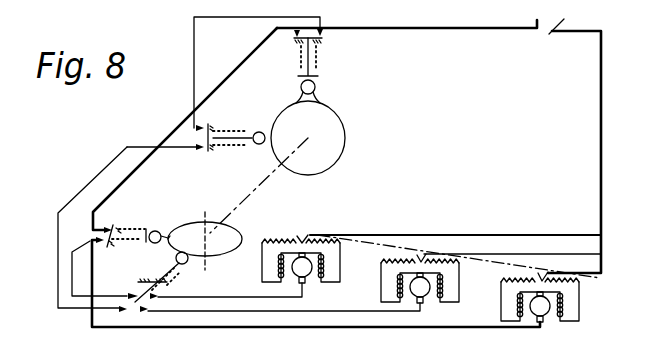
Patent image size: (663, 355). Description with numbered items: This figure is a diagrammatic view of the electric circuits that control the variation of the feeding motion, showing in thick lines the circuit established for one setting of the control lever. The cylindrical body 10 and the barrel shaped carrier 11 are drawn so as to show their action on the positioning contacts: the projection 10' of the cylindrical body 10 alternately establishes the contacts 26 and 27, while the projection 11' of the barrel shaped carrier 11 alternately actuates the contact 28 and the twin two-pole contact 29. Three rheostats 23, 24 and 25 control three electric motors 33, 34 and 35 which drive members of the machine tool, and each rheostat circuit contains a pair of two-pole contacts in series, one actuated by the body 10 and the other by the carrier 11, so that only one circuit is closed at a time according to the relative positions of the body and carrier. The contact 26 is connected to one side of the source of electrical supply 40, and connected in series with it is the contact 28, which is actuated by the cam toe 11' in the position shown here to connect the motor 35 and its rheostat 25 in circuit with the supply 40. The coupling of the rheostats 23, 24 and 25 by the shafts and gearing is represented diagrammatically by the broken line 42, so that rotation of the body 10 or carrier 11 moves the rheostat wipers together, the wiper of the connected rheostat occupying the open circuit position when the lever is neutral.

The cylindrical body 10 is at (328, 136).
The projection 10' is at (335, 85).
The barrel shaped carrier 11 is at (238, 215).
The projection 11' is at (184, 216).
The rheostat 23 is at (420, 268).
The rheostat 24 is at (301, 248).
The rheostat 25 is at (540, 286).
The contact 26 is at (309, 46).
The contact 27 is at (223, 137).
The contact 28 is at (132, 227).
The twin two-pole contact 29 is at (156, 288).
The motor 33 is at (426, 290).
The motor 34 is at (305, 270).
The motor 35 is at (545, 307).
The source of electrical supply 40 is at (569, 23).
The broken line 42 is at (505, 263).